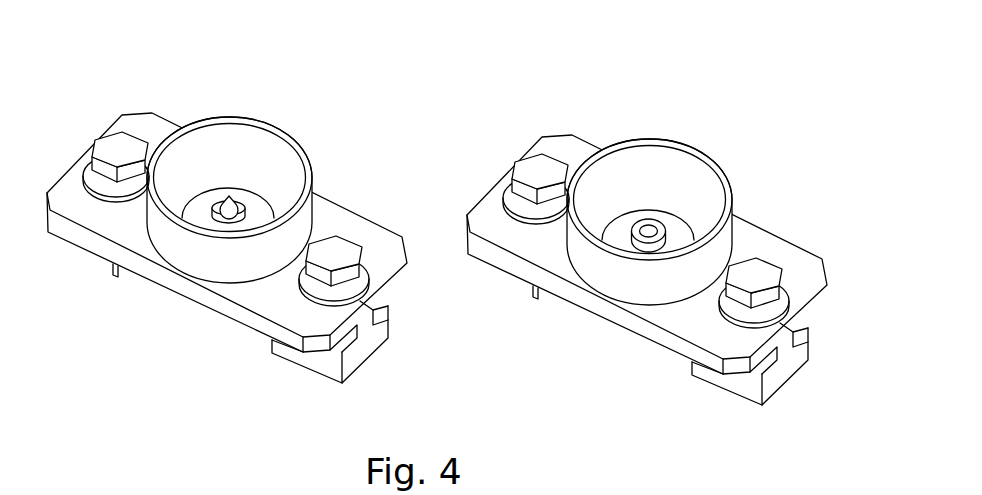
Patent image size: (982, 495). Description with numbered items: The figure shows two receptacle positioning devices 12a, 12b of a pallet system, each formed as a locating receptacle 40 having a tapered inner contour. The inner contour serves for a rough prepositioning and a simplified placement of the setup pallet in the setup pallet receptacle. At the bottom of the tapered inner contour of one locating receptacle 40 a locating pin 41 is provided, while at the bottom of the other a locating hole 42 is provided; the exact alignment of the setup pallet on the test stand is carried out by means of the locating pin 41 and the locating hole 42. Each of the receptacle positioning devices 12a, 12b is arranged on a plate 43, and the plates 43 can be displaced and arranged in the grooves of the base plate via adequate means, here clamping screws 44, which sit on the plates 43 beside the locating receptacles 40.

The receptacle positioning device 12a is at (762, 243).
The receptacle positioning device 12b is at (345, 227).
The locating receptacle 40 is at (193, 252).
The locating pin 41 is at (229, 203).
The locating hole 42 is at (648, 226).
The plate 43 is at (265, 295).
The clamping screw 44 is at (370, 337).